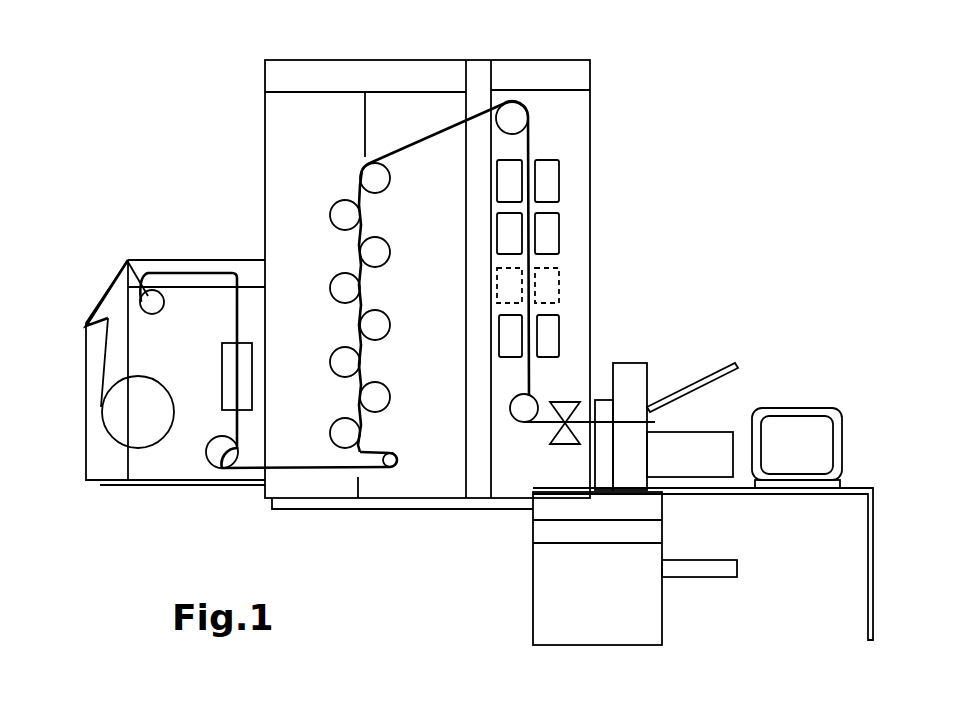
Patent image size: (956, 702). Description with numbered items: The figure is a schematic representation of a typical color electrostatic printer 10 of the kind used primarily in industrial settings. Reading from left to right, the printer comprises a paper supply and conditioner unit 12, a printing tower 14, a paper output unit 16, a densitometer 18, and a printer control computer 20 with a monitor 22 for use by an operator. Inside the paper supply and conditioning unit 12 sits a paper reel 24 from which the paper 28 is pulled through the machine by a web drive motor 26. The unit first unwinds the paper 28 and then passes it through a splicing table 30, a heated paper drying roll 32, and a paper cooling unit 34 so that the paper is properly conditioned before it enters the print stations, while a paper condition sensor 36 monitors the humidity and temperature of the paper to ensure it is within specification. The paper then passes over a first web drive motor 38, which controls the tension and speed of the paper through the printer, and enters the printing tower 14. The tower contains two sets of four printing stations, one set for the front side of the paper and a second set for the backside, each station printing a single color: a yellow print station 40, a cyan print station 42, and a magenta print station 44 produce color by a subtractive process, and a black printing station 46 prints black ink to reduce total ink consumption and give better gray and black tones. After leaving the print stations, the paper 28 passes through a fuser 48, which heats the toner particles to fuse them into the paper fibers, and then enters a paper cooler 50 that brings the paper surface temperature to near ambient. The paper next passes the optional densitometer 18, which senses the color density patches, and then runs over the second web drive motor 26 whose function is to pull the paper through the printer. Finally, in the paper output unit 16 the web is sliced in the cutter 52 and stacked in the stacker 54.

The color electrostatic printer 10 is at (215, 160).
The paper supply and conditioner unit 12 is at (119, 488).
The printing tower 14 is at (347, 61).
The paper output unit 16 is at (647, 357).
The densitometer 18 is at (550, 337).
The printer control computer 20 is at (645, 605).
The monitor 22 is at (805, 408).
The paper reel 24 is at (125, 423).
The web drive motor 26 is at (523, 412).
The paper 28 is at (103, 364).
The splicing table 30 is at (100, 298).
The heated paper drying roll 32 is at (153, 272).
The paper cooling unit 34 is at (227, 365).
The paper condition sensor 36 is at (222, 452).
The first web drive motor 38 is at (393, 467).
The yellow print station 40 is at (352, 433).
The cyan print station 42 is at (353, 362).
The magenta print station 44 is at (352, 290).
The black printing station 46 is at (352, 215).
The fuser 48 is at (555, 232).
The paper cooler 50 is at (553, 283).
The cutter 52 is at (565, 445).
The stacker 54 is at (700, 378).